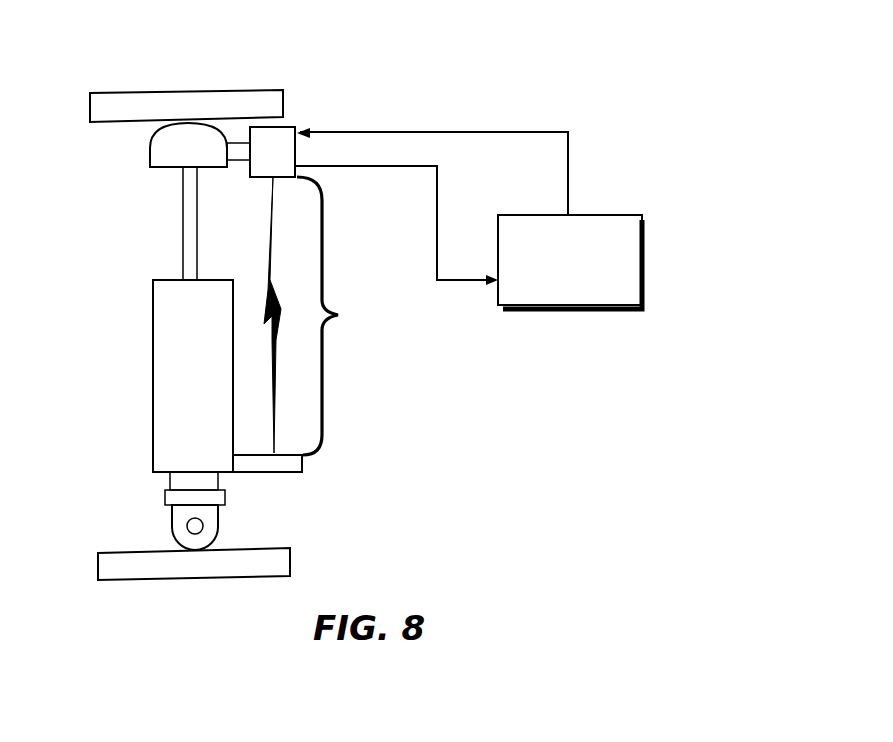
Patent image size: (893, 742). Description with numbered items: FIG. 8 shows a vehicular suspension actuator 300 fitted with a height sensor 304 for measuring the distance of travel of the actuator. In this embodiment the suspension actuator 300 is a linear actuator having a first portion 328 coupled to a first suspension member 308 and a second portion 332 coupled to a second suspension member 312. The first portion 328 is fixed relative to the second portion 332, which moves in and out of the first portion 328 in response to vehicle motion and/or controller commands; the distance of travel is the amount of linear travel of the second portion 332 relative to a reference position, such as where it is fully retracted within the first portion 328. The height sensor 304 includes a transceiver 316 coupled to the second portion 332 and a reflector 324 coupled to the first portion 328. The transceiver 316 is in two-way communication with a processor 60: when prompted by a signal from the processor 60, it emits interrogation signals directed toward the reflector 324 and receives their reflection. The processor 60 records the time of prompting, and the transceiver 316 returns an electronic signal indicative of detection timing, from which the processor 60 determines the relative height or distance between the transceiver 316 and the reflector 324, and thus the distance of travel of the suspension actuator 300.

The suspension actuator 300 is at (652, 81).
The second suspension member 312 is at (113, 92).
The second portion 332 is at (150, 145).
The transceiver 316 is at (298, 127).
The height sensor 304 is at (338, 315).
The reflector 324 is at (305, 463).
The first portion 328 is at (172, 530).
The first suspension member 308 is at (292, 558).
The processor 60 is at (645, 226).